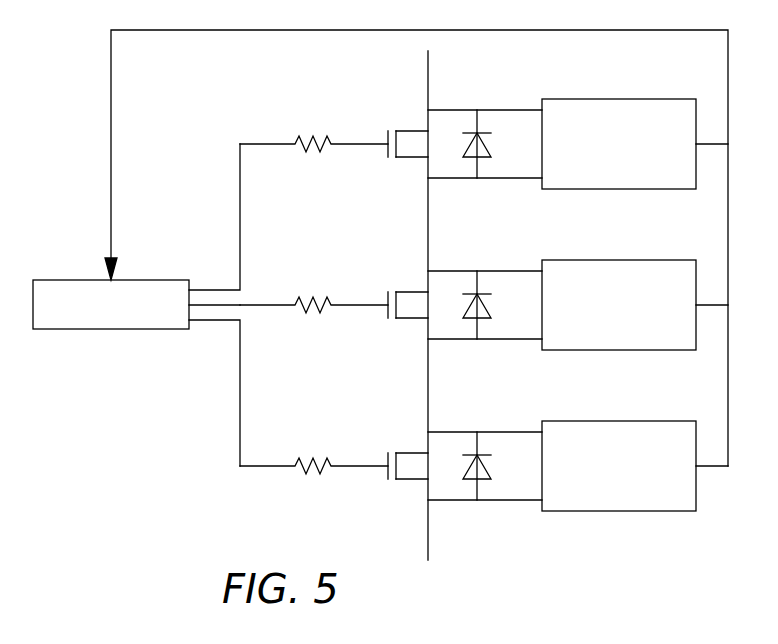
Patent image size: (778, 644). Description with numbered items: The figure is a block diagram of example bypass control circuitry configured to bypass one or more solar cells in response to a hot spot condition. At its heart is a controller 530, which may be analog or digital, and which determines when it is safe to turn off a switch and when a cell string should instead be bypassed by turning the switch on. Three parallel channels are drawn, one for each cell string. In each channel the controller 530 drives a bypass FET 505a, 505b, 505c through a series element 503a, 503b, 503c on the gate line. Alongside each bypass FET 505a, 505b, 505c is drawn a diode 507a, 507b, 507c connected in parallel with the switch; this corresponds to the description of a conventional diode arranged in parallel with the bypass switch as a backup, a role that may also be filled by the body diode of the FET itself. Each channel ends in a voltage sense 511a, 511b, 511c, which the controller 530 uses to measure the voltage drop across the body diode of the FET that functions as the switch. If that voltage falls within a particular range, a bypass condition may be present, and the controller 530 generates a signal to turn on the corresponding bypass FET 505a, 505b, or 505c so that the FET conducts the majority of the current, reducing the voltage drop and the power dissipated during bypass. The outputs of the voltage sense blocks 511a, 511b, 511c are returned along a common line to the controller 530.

The controller 530 is at (111, 304).
The resistor 503a is at (316, 136).
The resistor 503b is at (316, 297).
The resistor 503c is at (316, 458).
The bypass FET 505a is at (392, 128).
The bypass FET 505b is at (392, 289).
The bypass FET 505c is at (392, 450).
The diode 507a is at (441, 109).
The diode 507b is at (441, 270).
The diode 507c is at (441, 431).
The voltage sense 511a is at (635, 144).
The voltage sense 511b is at (635, 305).
The voltage sense 511c is at (635, 466).